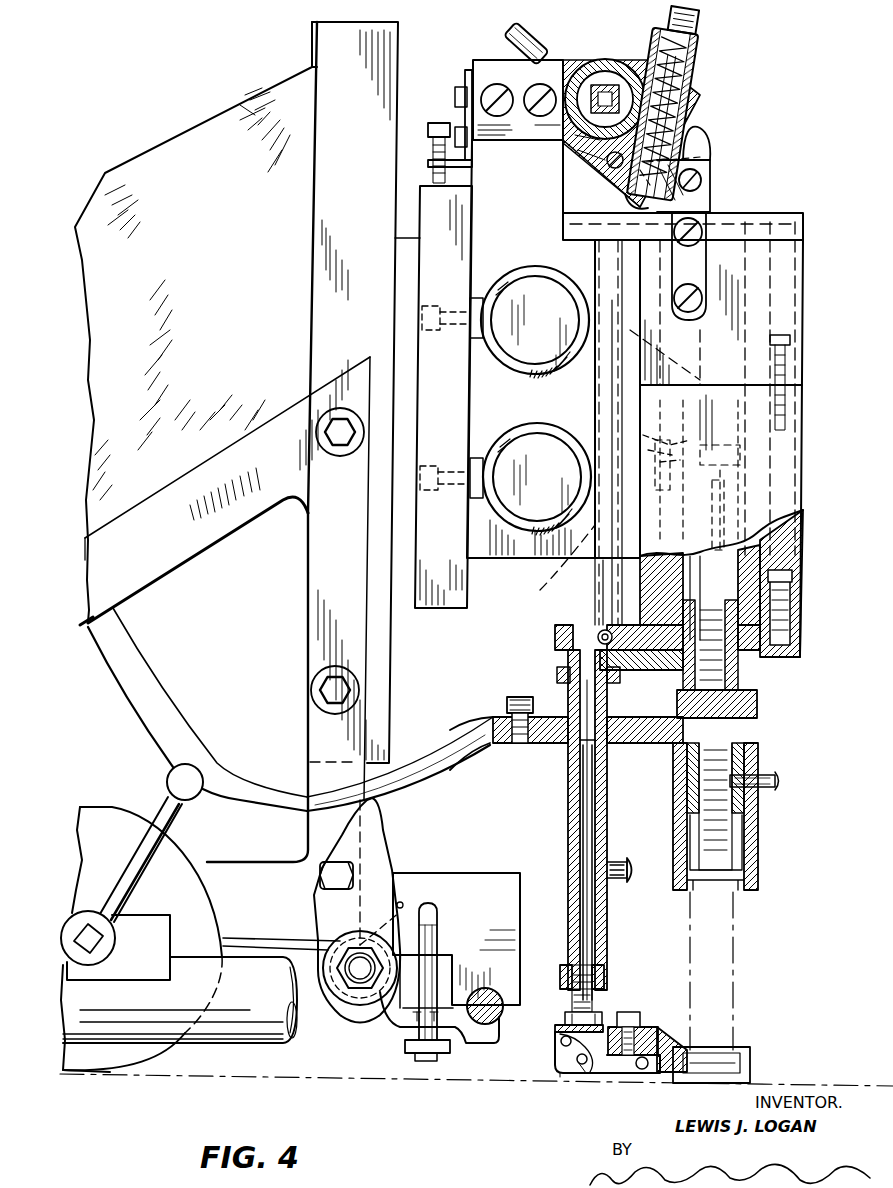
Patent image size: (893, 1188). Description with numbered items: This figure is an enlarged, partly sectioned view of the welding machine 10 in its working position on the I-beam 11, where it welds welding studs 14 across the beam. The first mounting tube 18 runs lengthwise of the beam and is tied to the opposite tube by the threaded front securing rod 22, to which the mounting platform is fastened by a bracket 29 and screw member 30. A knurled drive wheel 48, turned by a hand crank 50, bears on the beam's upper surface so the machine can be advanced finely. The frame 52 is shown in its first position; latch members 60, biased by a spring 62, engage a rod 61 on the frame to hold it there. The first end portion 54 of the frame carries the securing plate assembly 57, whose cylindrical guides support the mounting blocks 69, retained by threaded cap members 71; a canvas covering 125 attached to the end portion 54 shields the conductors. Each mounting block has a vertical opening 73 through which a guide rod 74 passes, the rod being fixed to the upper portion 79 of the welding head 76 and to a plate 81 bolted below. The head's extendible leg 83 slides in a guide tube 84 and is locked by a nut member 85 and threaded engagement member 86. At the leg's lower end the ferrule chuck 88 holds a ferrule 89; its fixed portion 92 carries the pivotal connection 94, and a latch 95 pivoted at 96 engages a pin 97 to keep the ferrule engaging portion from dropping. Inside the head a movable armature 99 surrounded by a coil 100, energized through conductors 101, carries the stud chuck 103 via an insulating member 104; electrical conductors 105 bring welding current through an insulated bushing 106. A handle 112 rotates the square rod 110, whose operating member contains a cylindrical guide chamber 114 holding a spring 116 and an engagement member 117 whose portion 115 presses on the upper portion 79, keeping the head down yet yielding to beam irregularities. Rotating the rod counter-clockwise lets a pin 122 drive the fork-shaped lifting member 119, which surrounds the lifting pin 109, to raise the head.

The welding machine 10 is at (178, 60).
The I-beam 11 is at (332, 1078).
The welding studs 14 is at (735, 985).
The first mounting tube 18 is at (215, 1022).
The front securing rod 22 is at (502, 1015).
The bracket 29 is at (390, 1028).
The screw member 30 is at (432, 965).
The knurled drive wheel 48 is at (108, 805).
The hand crank 50 is at (150, 868).
The frame 52 is at (178, 505).
The first end portion of frame 54 is at (326, 602).
The securing plate assembly 57 is at (436, 345).
The latch members 60 is at (378, 848).
The rod 61 is at (320, 876).
The spring 62 is at (345, 945).
The mounting blocks 69 is at (493, 222).
The threaded cap members 71 is at (545, 438).
The vertical opening 73 is at (562, 560).
The guide rod 74 is at (605, 585).
The welding head 76 is at (803, 462).
The upper portion of welding head 79 is at (588, 213).
The plate 81 is at (560, 627).
The extendible leg 83 is at (584, 862).
The guide tube 84 is at (570, 795).
The nut member 85 is at (606, 972).
The threaded engagement member 86 is at (625, 884).
The ferrule chuck 88 is at (678, 1009).
The ferrule 89 is at (755, 1070).
The fixed portion of ferrule chuck 92 is at (562, 1025).
The pivotal connection 94 is at (642, 1070).
The latch 95 is at (562, 1075).
The latch pivot 96 is at (566, 1043).
The pin 97 is at (582, 1065).
The movable armature 99 is at (730, 555).
The coil 100 is at (745, 470).
The conductors 101 is at (660, 452).
The stud chuck 103 is at (760, 853).
The insulating member 104 is at (760, 702).
The electrical conductors 105 is at (448, 775).
The insulated bushing 106 is at (565, 705).
The lifting pin 109 is at (702, 181).
The square rod 110 is at (605, 95).
The handle 112 is at (528, 24).
The cylindrical guide chamber 114 is at (690, 95).
The portion of engagement member 115 is at (636, 205).
The spring 116 is at (672, 108).
The engagement member 117 is at (705, 156).
The fork-shaped lifting member 119 is at (683, 137).
The pin 122 is at (618, 166).
The canvas covering 125 is at (185, 175).